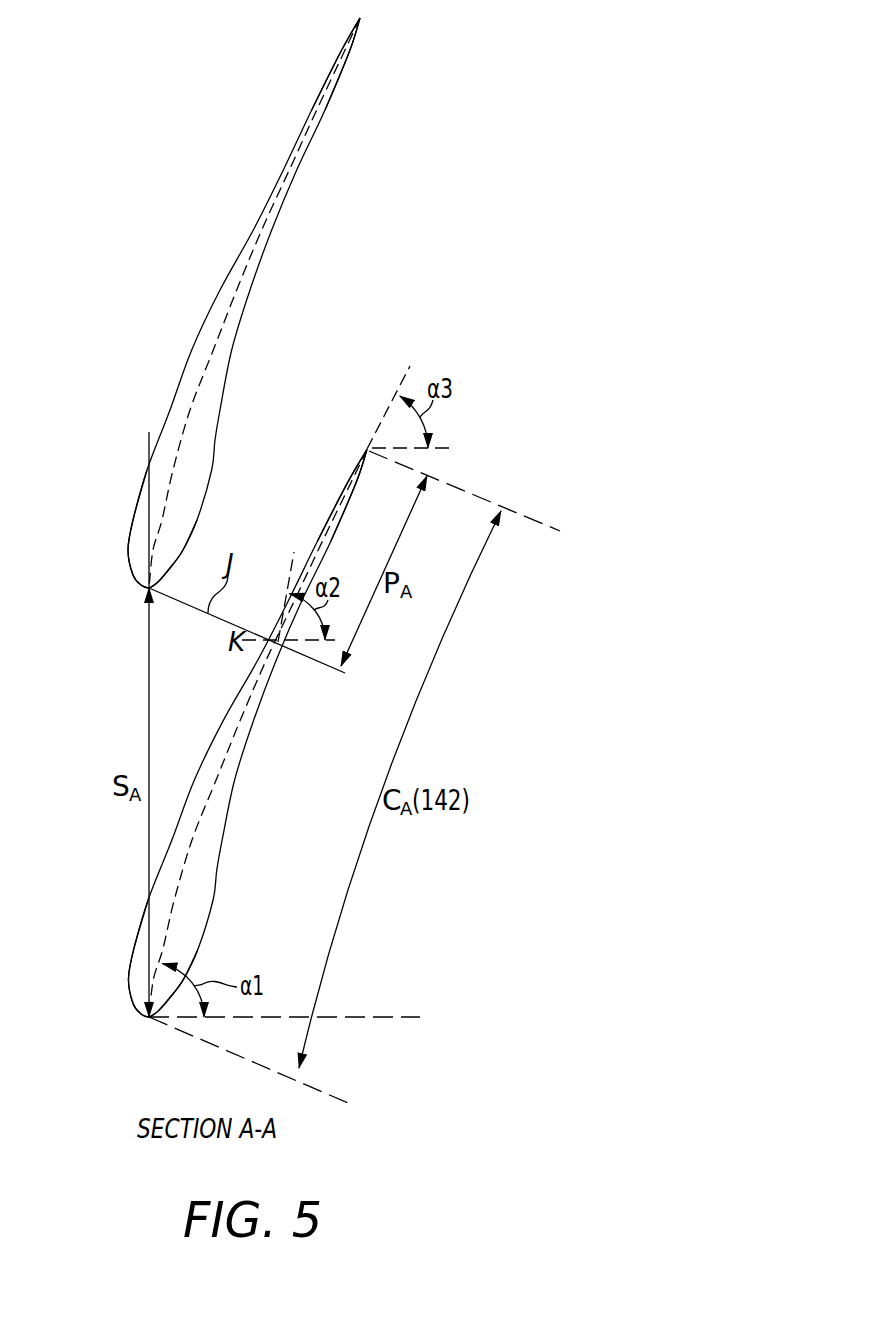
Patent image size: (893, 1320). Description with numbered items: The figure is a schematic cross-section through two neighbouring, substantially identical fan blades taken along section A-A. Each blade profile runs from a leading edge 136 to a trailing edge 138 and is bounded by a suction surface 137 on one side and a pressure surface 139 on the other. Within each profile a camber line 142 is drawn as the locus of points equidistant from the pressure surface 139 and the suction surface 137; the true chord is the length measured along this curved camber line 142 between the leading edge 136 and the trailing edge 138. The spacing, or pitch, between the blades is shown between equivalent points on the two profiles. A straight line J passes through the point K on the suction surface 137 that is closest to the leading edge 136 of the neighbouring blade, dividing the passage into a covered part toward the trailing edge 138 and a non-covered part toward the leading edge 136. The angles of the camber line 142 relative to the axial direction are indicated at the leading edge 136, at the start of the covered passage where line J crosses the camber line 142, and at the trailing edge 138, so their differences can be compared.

The leading edge 136 is at (149, 588).
The suction surface 137 is at (206, 321).
The trailing edge 138 is at (361, 18).
The pressure surface 139 is at (218, 432).
The camber line 142 is at (246, 245).